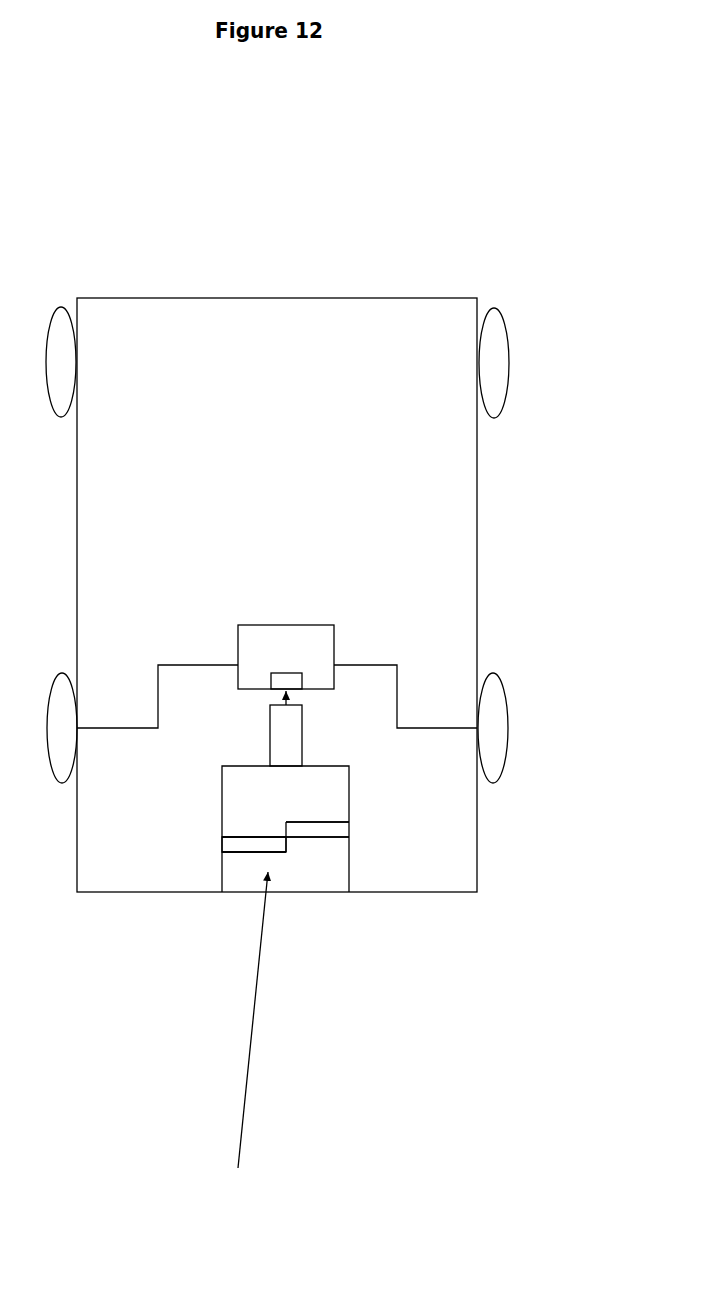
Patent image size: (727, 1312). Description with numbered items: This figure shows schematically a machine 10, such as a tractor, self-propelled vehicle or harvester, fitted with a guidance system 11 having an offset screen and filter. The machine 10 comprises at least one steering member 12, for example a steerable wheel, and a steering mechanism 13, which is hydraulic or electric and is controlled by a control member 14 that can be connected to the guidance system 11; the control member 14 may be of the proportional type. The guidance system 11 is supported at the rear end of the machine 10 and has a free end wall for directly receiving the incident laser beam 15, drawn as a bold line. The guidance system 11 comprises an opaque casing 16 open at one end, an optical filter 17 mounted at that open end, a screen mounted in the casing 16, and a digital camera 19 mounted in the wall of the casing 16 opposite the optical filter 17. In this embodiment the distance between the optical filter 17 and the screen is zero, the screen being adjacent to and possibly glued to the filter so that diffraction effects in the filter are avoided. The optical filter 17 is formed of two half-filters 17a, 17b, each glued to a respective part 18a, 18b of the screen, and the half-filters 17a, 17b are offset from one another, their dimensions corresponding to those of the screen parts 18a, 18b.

The machine 10 is at (421, 297).
The guidance system 11 is at (221, 847).
The steering member 12 is at (502, 735).
The steering mechanism 13 is at (277, 653).
The control member 14 is at (294, 688).
The incident laser beam 15 is at (253, 1022).
The opaque casing 16 is at (349, 878).
The optical filter 17 is at (275, 852).
The half-filter 17a is at (343, 838).
The half-filter 17b is at (247, 852).
The part of a screen 18a is at (325, 822).
The part of a screen 18b is at (247, 837).
The digital camera 19 is at (295, 737).